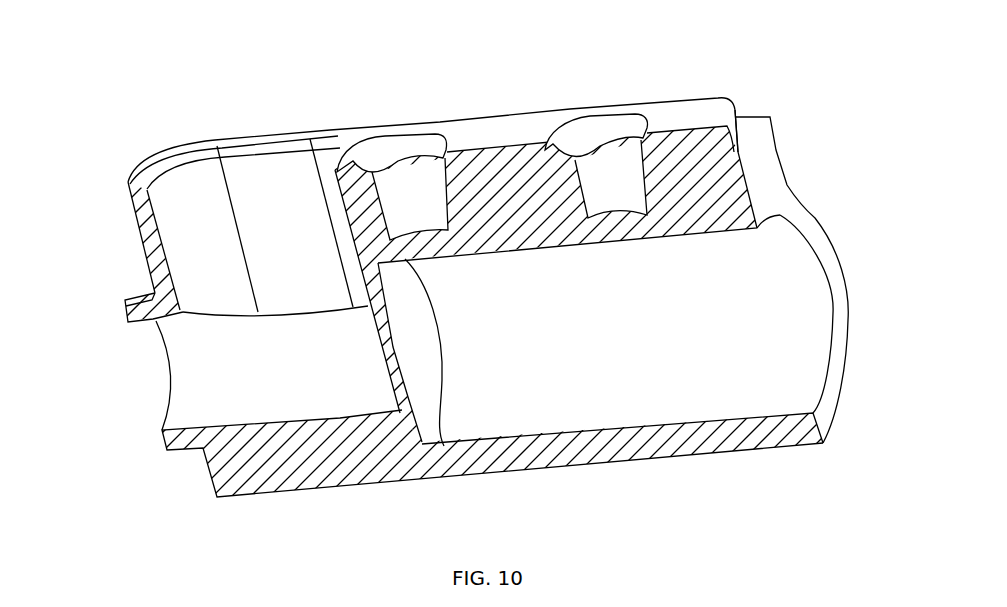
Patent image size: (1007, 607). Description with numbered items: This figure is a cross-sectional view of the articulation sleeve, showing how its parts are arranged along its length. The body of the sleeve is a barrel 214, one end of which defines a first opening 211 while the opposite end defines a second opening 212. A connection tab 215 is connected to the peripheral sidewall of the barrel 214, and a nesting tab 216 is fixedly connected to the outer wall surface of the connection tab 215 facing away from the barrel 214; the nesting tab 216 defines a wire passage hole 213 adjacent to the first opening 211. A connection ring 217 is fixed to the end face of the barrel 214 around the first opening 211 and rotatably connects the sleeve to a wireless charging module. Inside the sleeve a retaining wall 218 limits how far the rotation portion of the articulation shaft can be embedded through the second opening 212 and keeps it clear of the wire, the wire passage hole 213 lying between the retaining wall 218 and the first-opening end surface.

The first opening 211 is at (152, 370).
The second opening 212 is at (826, 315).
The wire passage hole 213 is at (282, 170).
The barrel 214 is at (673, 453).
The connection tab 215 is at (767, 167).
The nesting tab 216 is at (680, 112).
The connection ring 217 is at (137, 293).
The retaining wall 218 is at (428, 398).